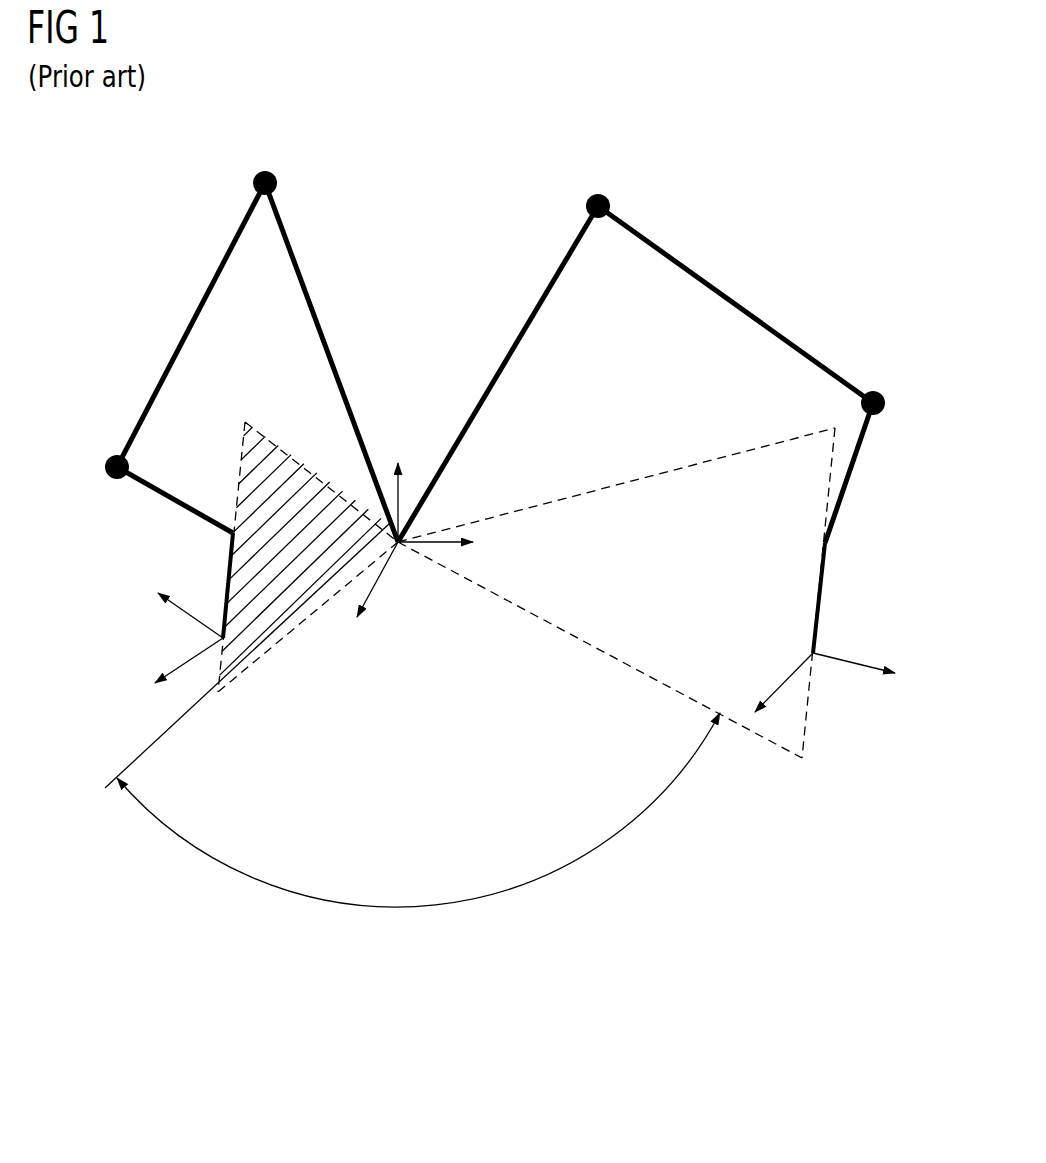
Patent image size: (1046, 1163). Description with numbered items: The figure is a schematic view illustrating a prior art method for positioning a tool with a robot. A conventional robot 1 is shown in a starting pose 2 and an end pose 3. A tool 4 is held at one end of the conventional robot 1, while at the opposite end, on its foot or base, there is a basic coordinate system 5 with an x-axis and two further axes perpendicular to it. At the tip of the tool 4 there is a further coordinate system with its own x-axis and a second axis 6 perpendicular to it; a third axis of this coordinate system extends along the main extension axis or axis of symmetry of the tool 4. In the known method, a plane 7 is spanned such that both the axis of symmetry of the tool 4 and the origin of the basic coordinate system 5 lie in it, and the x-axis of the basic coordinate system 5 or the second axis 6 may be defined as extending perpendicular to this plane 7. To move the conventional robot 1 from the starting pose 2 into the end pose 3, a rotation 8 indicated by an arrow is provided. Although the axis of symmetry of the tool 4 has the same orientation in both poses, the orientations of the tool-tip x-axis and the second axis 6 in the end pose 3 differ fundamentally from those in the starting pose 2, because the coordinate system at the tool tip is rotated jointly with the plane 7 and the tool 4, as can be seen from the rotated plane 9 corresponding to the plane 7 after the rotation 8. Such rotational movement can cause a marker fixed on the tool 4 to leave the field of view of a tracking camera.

The conventional robot 1 is at (495, 357).
The starting pose 2 is at (742, 305).
The end pose 3 is at (188, 327).
The tool 4 is at (230, 568).
The basic coordinate system 5 is at (377, 582).
The second axis 6 is at (175, 613).
The plane 7 is at (800, 725).
The rotation 8 is at (395, 910).
The rotated plane 9 is at (253, 647).